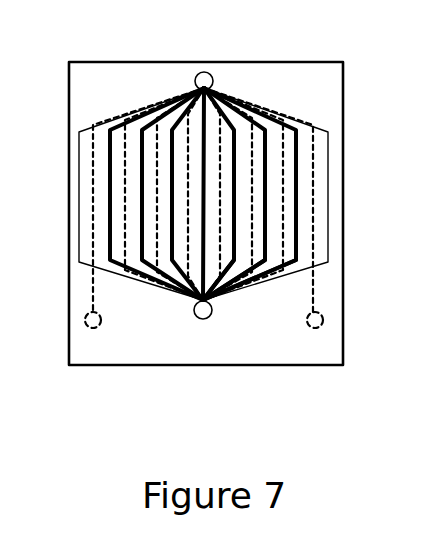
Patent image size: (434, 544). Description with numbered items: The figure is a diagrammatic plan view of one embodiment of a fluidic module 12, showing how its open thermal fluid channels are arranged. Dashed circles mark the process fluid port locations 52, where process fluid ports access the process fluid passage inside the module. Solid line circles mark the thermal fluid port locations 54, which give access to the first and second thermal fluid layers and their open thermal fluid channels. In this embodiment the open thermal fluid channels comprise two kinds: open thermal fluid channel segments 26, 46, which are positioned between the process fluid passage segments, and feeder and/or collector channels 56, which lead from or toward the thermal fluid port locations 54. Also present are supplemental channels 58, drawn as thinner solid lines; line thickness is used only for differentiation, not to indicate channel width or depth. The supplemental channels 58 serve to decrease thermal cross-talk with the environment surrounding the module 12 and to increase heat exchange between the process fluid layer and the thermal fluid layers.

The fluidic module 12 is at (139, 399).
The open thermal fluid channel segment 26 is at (261, 194).
The open thermal fluid channel segment 46 is at (235, 180).
The process fluid port location 52 is at (85, 323).
The thermal fluid port location 54 is at (204, 72).
The feeder and/or collector channel 56 is at (295, 263).
The supplemental channel 58 is at (80, 193).